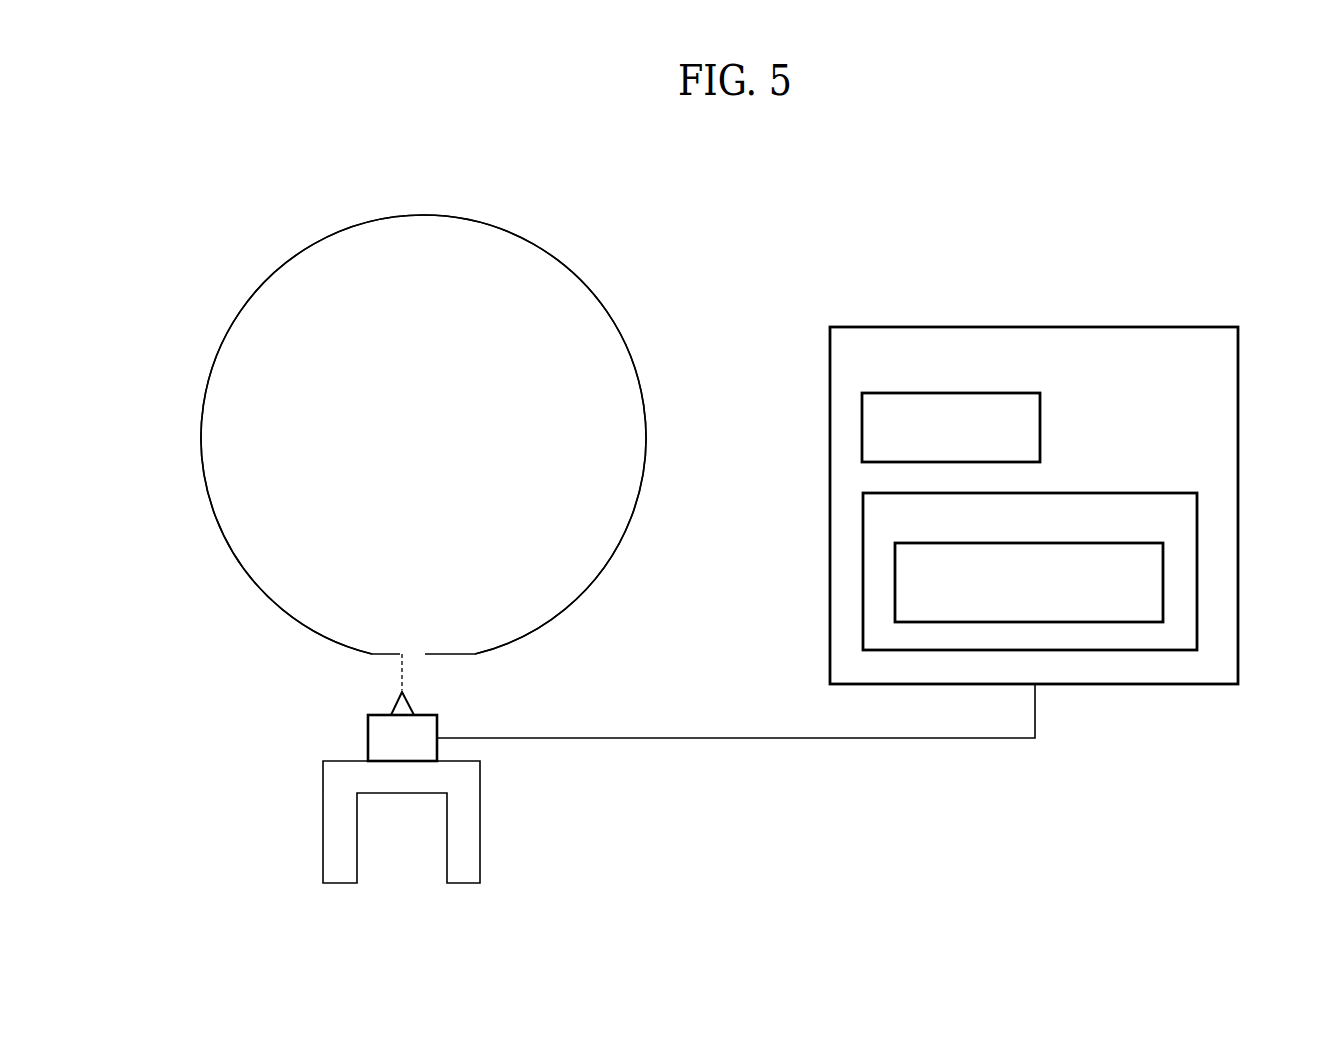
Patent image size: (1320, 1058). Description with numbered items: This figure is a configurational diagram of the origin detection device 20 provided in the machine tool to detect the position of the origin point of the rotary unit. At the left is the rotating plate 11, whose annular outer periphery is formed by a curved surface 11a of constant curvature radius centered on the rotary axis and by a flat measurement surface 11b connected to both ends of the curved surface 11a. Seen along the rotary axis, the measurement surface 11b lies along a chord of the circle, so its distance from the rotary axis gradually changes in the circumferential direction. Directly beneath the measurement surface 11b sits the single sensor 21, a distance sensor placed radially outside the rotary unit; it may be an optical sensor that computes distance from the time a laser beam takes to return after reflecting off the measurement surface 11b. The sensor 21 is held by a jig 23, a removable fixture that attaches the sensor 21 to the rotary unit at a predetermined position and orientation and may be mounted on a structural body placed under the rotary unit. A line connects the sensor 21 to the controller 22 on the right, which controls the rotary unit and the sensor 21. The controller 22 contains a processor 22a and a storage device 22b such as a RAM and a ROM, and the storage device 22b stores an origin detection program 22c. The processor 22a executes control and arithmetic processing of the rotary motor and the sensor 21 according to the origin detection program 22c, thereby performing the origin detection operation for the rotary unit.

The rotating plate 11 is at (203, 436).
The curved surface 11a is at (548, 251).
The measurement surface 11b is at (437, 655).
The origin detection device 20 is at (1103, 252).
The sensor 21 is at (368, 732).
The controller 22 is at (1018, 326).
The processor 22a is at (1042, 425).
The storage device 22b is at (1197, 572).
The origin detection program 22c is at (1108, 623).
The jig 23 is at (481, 818).